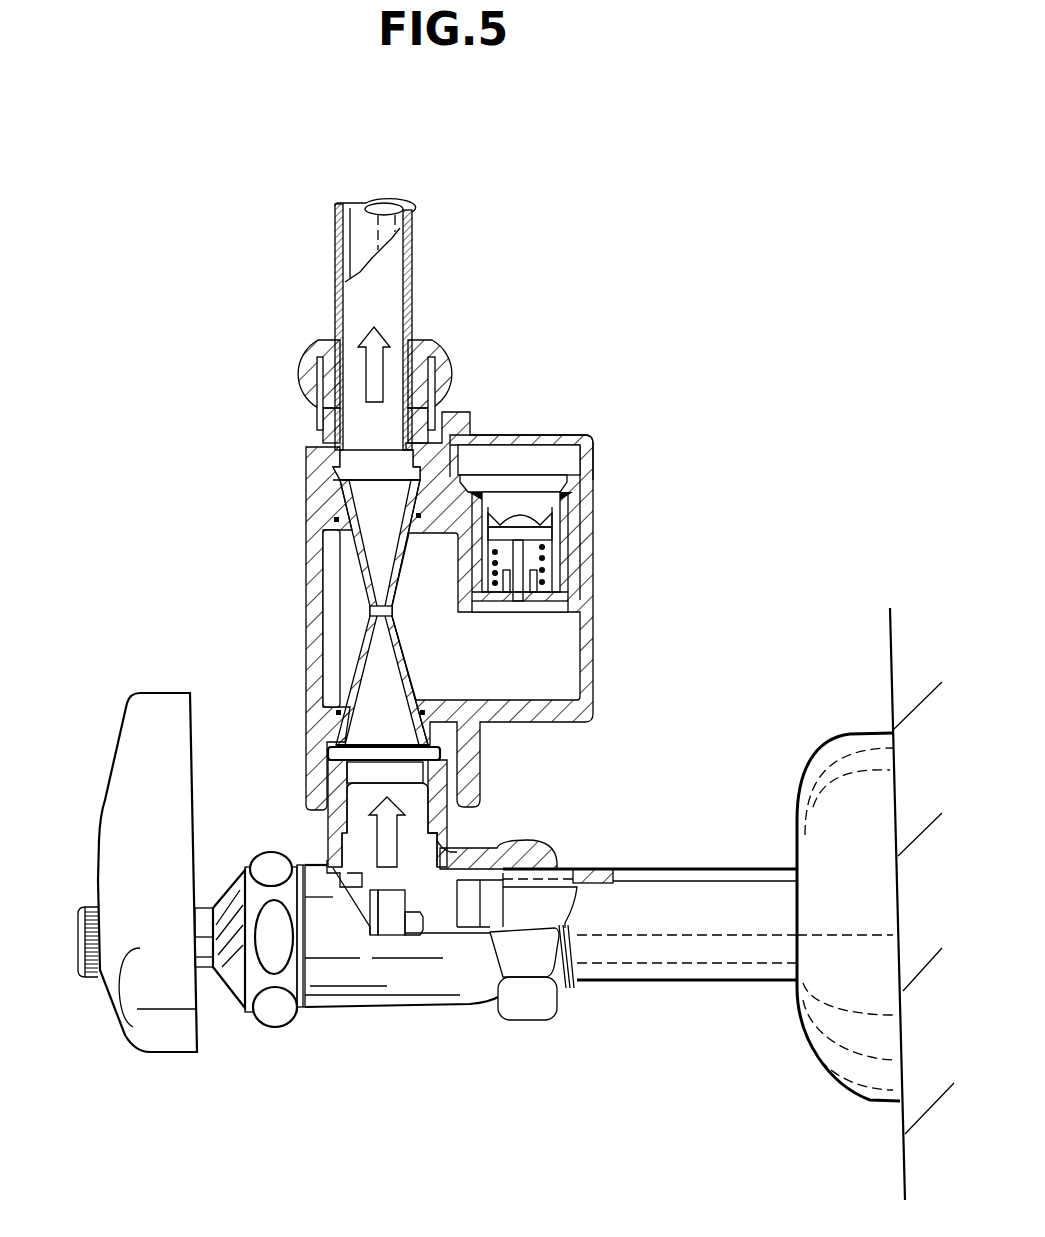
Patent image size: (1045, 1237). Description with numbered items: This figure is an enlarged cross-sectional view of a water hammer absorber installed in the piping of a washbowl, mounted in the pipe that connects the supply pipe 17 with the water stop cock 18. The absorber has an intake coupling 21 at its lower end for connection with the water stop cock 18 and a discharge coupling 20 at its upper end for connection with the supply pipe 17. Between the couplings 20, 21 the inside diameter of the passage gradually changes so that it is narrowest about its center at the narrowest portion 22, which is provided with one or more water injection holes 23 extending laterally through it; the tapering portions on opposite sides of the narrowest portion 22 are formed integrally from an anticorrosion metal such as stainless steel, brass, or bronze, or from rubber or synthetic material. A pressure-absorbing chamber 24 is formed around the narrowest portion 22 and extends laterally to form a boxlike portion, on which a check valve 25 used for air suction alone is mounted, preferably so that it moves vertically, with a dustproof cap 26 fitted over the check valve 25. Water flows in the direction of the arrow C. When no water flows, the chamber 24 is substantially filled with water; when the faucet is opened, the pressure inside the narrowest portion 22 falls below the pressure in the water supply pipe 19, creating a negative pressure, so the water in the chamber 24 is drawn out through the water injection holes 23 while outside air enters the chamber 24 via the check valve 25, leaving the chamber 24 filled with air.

The supply pipe 17 is at (401, 324).
The water stop cock 18 is at (327, 884).
The water supply pipe 19 is at (701, 917).
The discharge coupling 20 is at (401, 391).
The intake coupling 21 is at (442, 811).
The narrowest portion 22 is at (381, 612).
The water injection holes 23 is at (392, 631).
The pressure-absorbing chamber 24 is at (492, 609).
The check valve 25 is at (519, 526).
The dustproof cap 26 is at (521, 491).